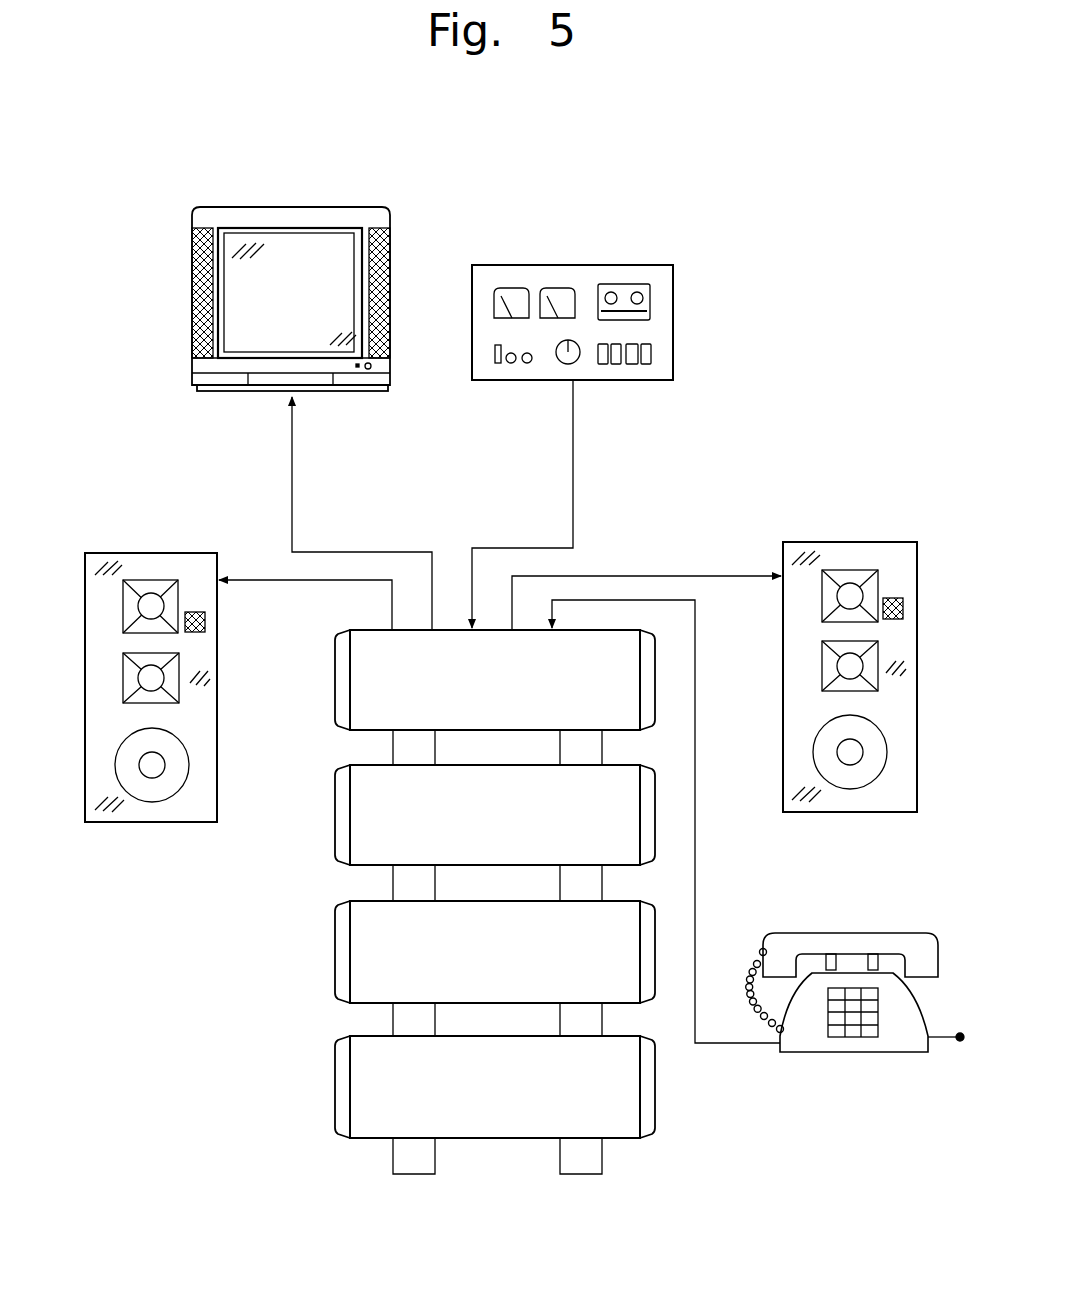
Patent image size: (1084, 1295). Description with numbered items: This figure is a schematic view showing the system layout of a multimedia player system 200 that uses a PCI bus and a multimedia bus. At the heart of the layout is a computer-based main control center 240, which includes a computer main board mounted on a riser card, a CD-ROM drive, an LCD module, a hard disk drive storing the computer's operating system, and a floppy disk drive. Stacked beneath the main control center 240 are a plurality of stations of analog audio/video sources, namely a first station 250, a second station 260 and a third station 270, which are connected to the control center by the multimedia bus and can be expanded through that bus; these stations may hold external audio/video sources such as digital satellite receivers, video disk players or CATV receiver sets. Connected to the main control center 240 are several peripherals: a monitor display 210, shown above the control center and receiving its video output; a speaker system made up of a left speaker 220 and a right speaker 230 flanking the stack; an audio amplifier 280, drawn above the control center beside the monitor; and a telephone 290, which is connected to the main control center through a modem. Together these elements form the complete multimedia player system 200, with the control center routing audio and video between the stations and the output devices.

The computer based control system 200 is at (722, 455).
The monitor display 210 is at (312, 206).
The speaker system 220 is at (141, 552).
The speaker system 230 is at (861, 541).
The computer-based main control center 240 is at (335, 676).
The first station 250 is at (338, 818).
The second station 260 is at (338, 958).
The third station 270 is at (340, 1098).
The audio amplifier 280 is at (575, 264).
The telephone 290 is at (796, 1058).